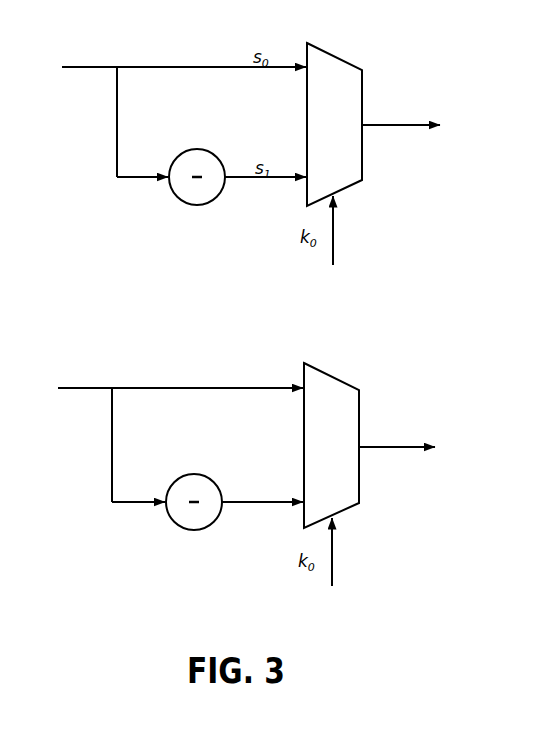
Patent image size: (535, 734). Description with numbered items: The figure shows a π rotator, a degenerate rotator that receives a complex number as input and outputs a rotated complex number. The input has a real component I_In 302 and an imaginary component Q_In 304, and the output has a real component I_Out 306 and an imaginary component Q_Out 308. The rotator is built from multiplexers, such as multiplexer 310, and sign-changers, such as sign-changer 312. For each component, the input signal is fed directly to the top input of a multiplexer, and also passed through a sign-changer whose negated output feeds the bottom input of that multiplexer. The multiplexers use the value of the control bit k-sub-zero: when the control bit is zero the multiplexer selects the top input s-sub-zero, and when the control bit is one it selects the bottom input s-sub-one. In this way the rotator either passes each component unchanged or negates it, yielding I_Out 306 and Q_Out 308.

The real component I_In 302 is at (175, 99).
The imaginary component Q_In 304 is at (175, 424).
The real component I_Out 306 is at (416, 107).
The imaginary component Q_Out 308 is at (417, 428).
The multiplexer 310 is at (334, 136).
The sign-changer 312 is at (237, 198).